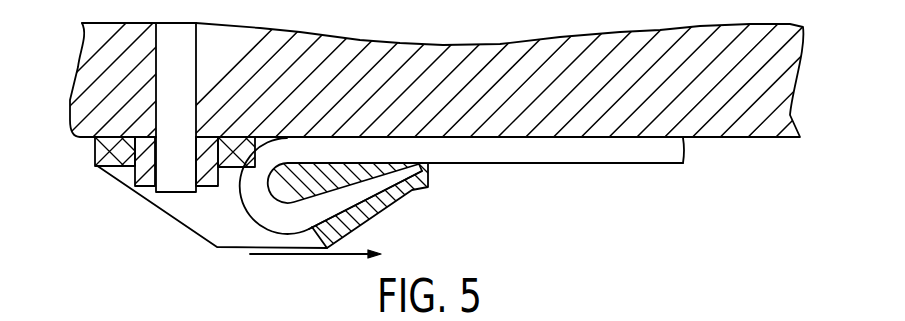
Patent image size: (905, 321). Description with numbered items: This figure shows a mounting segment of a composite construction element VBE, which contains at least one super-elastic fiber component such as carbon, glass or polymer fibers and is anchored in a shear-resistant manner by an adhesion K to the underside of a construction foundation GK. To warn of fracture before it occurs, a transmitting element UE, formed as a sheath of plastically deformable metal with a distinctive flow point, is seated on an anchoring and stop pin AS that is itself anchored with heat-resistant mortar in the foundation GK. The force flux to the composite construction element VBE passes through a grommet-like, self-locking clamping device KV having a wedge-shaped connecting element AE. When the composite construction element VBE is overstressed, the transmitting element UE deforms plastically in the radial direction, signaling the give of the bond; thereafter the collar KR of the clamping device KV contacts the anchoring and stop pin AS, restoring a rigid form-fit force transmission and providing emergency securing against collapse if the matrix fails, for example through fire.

The construction foundation GK is at (770, 67).
The collar KR is at (118, 147).
The transmitting element UE is at (135, 182).
The anchoring and stop pin AS is at (166, 181).
The adhesion K is at (700, 140).
The composite construction element VBE is at (587, 153).
The clamping device KV is at (415, 192).
The connecting element AE is at (365, 216).